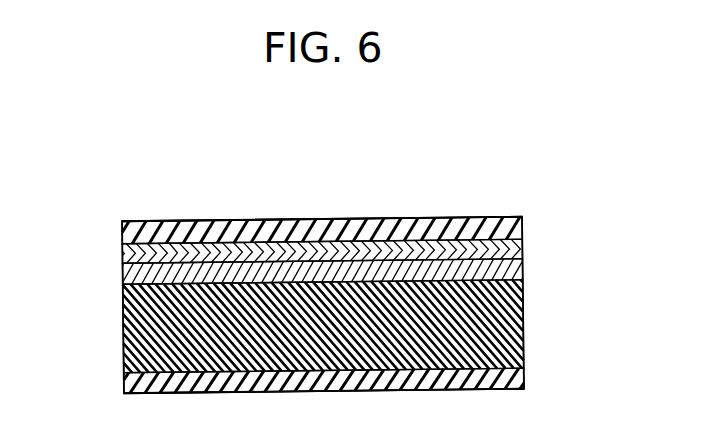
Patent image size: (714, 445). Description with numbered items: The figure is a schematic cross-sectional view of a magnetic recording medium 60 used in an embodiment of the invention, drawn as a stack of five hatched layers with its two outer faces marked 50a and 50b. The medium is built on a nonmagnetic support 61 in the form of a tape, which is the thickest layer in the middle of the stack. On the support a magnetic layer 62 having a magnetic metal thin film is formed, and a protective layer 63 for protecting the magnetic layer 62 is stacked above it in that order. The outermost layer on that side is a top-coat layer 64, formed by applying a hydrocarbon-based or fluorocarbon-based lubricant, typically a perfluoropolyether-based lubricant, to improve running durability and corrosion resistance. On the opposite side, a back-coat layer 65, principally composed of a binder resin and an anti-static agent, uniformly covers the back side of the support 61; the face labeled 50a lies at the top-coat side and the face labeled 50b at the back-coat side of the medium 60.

The magnetic recording medium 60 is at (613, 207).
The nonmagnetic support 61 is at (523, 318).
The magnetic layer 62 is at (523, 274).
The protective layer 63 is at (523, 246).
The top-coat layer 64 is at (523, 218).
The back-coat layer 65 is at (523, 373).
The first surface 50a is at (123, 236).
The second surface 50b is at (123, 387).